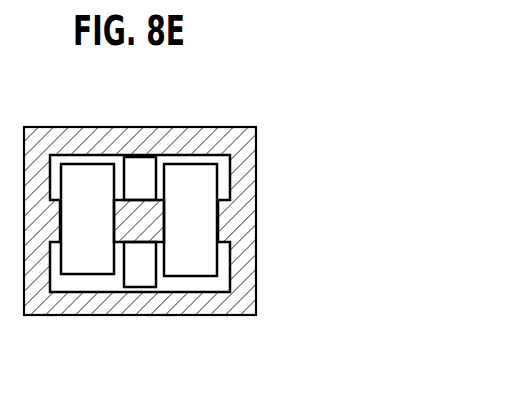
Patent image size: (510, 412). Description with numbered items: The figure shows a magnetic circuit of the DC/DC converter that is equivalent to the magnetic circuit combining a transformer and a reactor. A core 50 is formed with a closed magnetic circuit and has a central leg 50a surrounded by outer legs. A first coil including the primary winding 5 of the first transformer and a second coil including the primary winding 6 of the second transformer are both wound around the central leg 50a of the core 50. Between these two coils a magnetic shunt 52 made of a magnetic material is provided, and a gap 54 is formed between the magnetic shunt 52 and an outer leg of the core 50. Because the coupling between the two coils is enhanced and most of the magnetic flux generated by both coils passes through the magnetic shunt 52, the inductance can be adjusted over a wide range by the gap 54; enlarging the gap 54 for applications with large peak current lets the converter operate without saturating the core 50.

The core 50 is at (140, 198).
The central leg 50a is at (121, 246).
The magnetic shunt 52 is at (147, 166).
The gap 54 is at (138, 154).
The primary winding of the transformer T1 5 is at (83, 276).
The primary winding of the transformer T2 6 is at (197, 278).